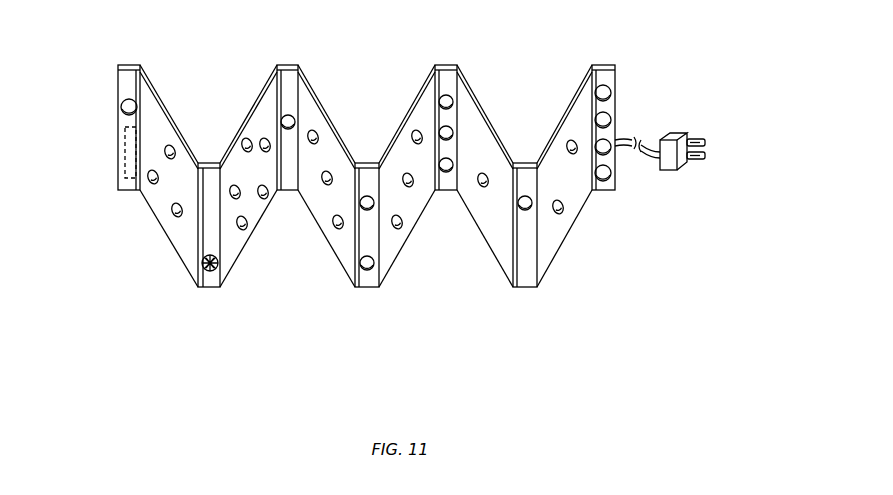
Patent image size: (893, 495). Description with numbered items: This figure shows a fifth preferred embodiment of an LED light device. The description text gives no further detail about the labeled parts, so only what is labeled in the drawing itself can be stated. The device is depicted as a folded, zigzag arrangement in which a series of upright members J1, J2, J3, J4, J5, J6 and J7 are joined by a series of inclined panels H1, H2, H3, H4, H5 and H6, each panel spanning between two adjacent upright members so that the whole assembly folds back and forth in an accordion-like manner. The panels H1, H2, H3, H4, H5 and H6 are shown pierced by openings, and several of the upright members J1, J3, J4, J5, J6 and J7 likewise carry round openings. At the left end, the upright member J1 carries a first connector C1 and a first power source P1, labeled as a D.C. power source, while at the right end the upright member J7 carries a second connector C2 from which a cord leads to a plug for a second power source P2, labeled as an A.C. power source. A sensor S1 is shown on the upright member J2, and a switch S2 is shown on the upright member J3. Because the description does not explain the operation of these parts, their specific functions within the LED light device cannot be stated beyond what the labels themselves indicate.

The joint member J1 is at (130, 65).
The joint member J2 is at (208, 287).
The joint member J3 is at (286, 65).
The joint member J4 is at (365, 287).
The joint member J5 is at (445, 65).
The joint member J6 is at (522, 287).
The joint member J7 is at (603, 65).
The hinged panel H1 is at (157, 219).
The hinged panel H2 is at (243, 248).
The hinged panel H3 is at (317, 222).
The hinged panel H4 is at (398, 256).
The hinged panel H5 is at (473, 218).
The hinged panel H6 is at (558, 250).
The connector C1 is at (118, 97).
The connector C2 is at (617, 100).
The D.C. power source P1 is at (127, 162).
The A.C. power source P2 is at (677, 171).
The sensor S1 is at (204, 266).
The switch S2 is at (293, 122).